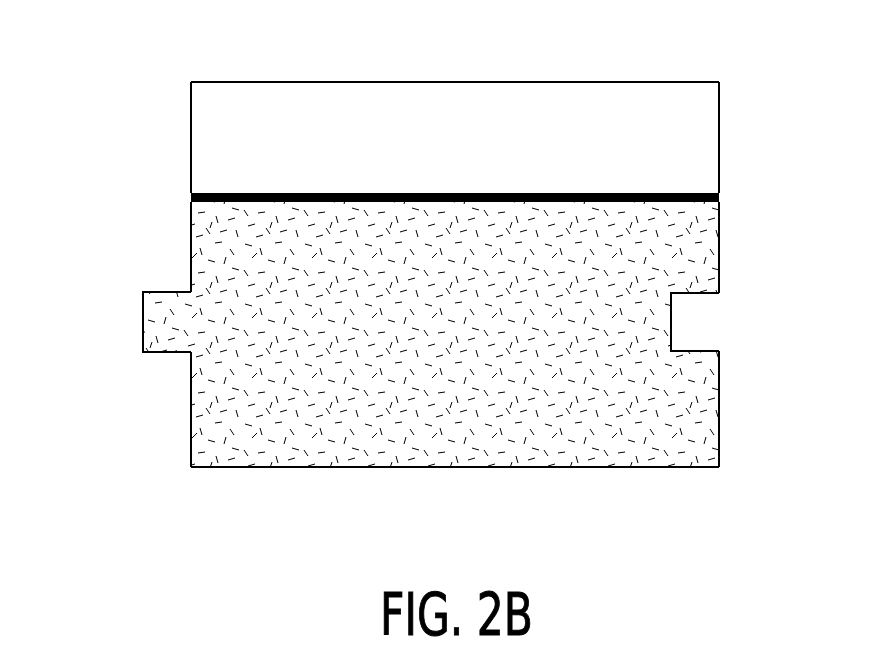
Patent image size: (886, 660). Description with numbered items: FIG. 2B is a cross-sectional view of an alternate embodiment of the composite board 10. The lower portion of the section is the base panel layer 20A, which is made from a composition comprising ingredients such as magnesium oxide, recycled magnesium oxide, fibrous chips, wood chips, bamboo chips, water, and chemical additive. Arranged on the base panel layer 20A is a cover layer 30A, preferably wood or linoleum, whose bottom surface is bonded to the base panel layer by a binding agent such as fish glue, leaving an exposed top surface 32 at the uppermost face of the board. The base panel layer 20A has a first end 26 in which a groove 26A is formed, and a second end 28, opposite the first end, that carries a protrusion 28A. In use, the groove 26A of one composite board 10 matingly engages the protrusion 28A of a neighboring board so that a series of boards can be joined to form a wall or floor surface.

The composite board 10 is at (441, 287).
The base panel layer 20A is at (215, 447).
The first end 26 is at (719, 240).
The groove 26A is at (671, 320).
The second end 28 is at (191, 232).
The protrusion 28A is at (143, 317).
The cover layer 30A is at (191, 132).
The top surface 32 is at (235, 81).